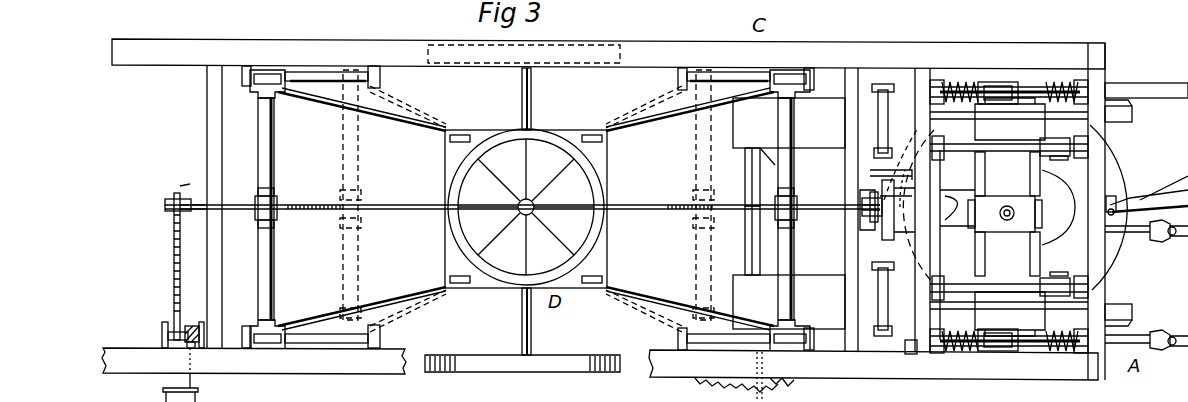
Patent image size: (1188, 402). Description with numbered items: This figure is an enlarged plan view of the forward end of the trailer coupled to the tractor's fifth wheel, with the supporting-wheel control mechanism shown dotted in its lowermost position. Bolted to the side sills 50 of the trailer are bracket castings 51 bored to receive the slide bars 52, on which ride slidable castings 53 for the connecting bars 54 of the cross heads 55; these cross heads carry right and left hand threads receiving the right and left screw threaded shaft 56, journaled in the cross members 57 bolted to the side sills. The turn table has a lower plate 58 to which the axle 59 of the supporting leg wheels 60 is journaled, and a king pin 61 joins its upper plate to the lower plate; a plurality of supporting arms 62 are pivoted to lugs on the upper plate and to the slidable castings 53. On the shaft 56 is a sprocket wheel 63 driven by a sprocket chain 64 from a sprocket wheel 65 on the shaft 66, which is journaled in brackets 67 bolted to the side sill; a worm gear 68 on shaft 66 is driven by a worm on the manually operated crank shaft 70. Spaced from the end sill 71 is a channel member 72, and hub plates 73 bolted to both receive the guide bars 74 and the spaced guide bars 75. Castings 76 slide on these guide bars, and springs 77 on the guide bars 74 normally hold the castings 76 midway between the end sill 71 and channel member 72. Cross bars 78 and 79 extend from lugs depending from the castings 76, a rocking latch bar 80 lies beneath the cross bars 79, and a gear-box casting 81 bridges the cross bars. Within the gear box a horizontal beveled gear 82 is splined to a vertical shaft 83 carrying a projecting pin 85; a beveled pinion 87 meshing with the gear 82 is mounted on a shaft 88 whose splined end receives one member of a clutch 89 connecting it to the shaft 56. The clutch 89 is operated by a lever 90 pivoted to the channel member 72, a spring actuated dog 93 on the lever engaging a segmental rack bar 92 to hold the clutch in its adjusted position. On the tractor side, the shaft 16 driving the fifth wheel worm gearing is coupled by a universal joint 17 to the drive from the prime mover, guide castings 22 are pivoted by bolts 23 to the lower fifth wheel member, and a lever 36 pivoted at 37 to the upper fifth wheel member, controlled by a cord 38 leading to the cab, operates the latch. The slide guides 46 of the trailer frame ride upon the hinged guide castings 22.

The shaft 16 is at (1134, 238).
The universal joint 17 is at (1168, 240).
The guide castings 22 is at (789, 152).
The bolts 23 is at (878, 128).
The lever 36 is at (1116, 200).
The pivot 37 is at (1112, 210).
The cord 38 is at (1150, 214).
The bearing cap 46 is at (1132, 116).
The side sills 50 is at (603, 209).
The bracket castings 51 is at (249, 70).
The slide bars 52 is at (312, 75).
The slidable castings 53 is at (270, 78).
The connecting bars 54 is at (274, 164).
The cross heads 55 is at (277, 224).
The right and left screw threaded shaft 56 is at (674, 208).
The cross members 57 is at (222, 249).
The lower plate 58 is at (452, 232).
The axle 59 is at (522, 320).
The supporting leg wheels 60 is at (490, 66).
The king pin 61 is at (534, 186).
The supporting arms 62 is at (394, 124).
The sprocket wheel 63 is at (802, 40).
The sprocket chain 64 is at (174, 265).
The sprocket wheel 65 is at (172, 332).
The shaft 66 is at (188, 324).
The brackets 67 is at (168, 338).
The worm gear 68 is at (190, 344).
The crank shaft 70 is at (188, 375).
The end sill 71 is at (1112, 282).
The channel member 72 is at (915, 352).
The hub plates 73 is at (942, 78).
The guide bars 74 is at (1002, 82).
The guide bars 75 is at (1064, 217).
The slidable castings 76 is at (1009, 217).
The springs 77 is at (958, 80).
The cross bar 78 is at (1030, 162).
The cross bar 79 is at (975, 166).
The rocking latch bar 80 is at (888, 250).
The gear-box casting 81 is at (1005, 214).
The beveled gear 82 is at (789, 267).
The vertical shaft 83 is at (1015, 213).
The projecting pin 85 is at (1062, 188).
The beveled pinion 87 is at (1164, 182).
The shaft 88 is at (953, 245).
The clutch 89 is at (882, 196).
The lever 90 is at (906, 252).
The segmental rack bar 92 is at (736, 390).
The spring actuated dog 93 is at (779, 377).